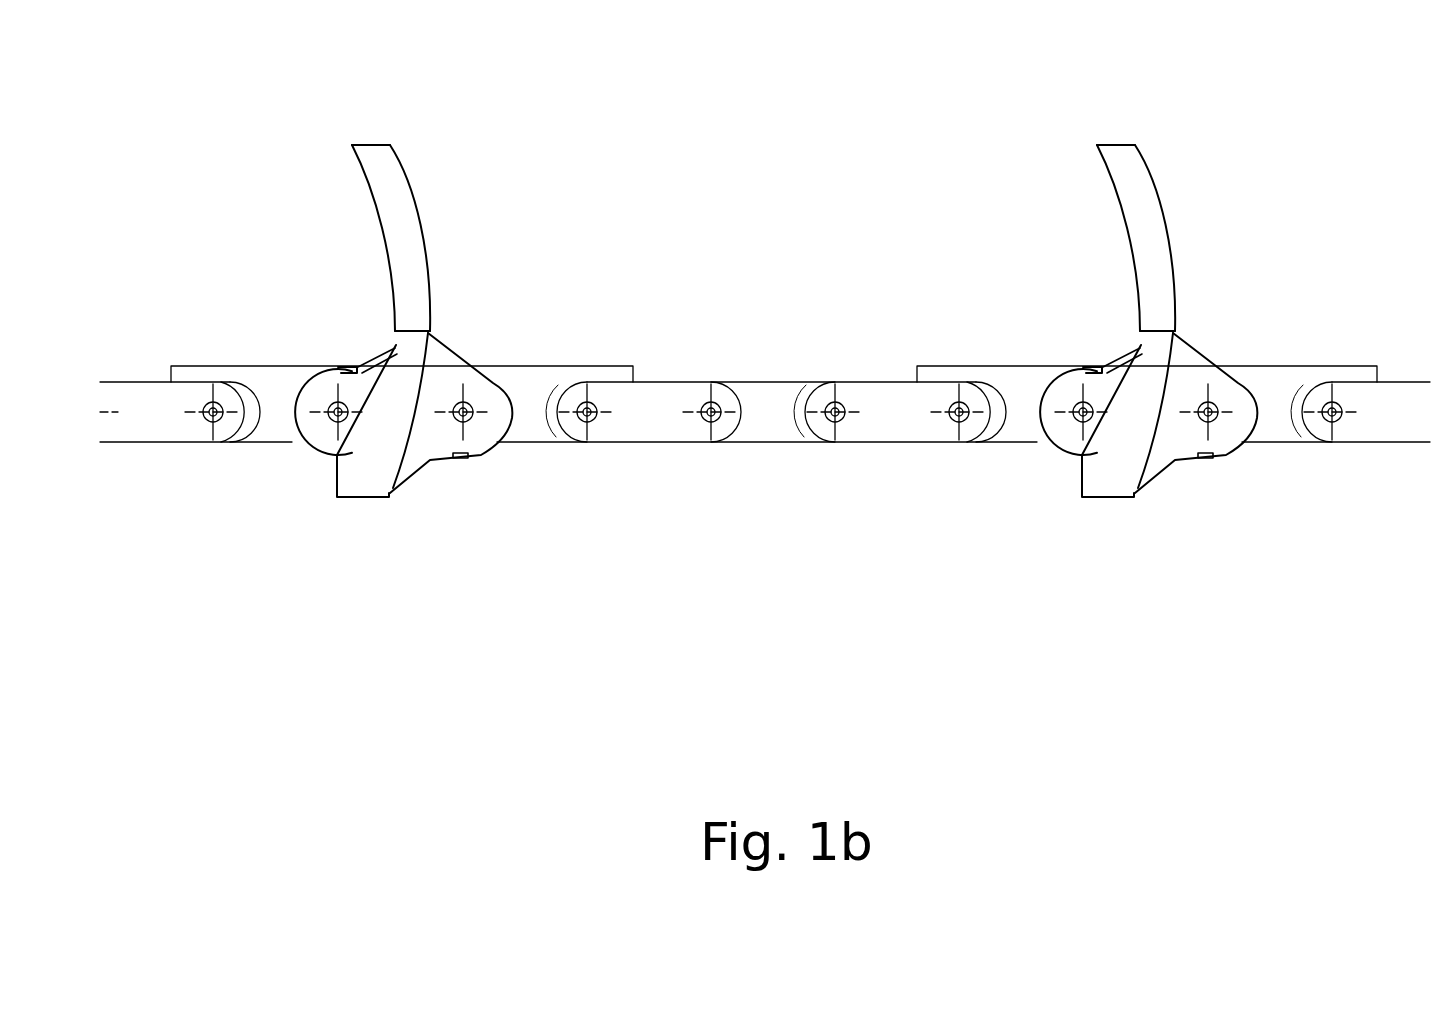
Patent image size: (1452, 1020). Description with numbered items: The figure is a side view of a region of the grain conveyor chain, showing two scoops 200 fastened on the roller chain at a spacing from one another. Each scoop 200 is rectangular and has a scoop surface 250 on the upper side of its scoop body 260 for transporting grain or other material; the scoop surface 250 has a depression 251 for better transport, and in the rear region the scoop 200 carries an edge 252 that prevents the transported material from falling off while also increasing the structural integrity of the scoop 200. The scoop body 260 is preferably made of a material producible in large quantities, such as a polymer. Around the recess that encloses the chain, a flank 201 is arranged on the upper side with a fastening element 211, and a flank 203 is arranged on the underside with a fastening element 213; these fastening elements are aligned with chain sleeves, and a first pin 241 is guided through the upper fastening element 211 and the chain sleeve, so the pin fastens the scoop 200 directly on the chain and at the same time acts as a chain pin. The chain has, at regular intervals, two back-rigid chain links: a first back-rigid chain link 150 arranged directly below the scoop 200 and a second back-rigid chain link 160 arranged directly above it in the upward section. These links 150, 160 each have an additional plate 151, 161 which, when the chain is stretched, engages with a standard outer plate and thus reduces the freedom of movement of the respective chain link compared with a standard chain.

The first back-rigid chain link 150 is at (592, 404).
The additional plate 151 is at (228, 378).
The second back-rigid chain link 160 is at (210, 408).
The additional plate 161 is at (283, 420).
The scoop 200 is at (785, 192).
The flank 201 is at (296, 452).
The flank 203 is at (427, 466).
The fastening element 211 is at (353, 397).
The fastening element 213 is at (482, 415).
The first pin 241 is at (332, 408).
The scoop surface 250 is at (367, 198).
The depression 251 is at (389, 286).
The edge 252 is at (348, 481).
The scoop body 260 is at (390, 230).